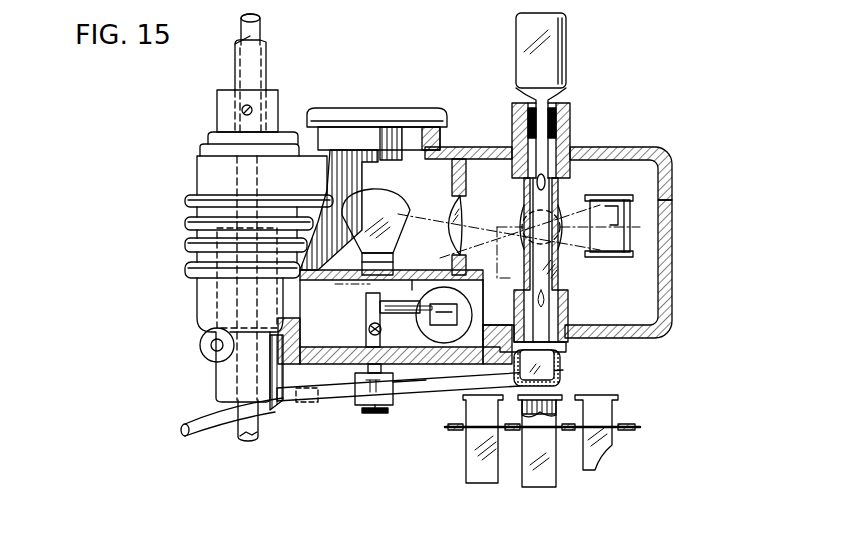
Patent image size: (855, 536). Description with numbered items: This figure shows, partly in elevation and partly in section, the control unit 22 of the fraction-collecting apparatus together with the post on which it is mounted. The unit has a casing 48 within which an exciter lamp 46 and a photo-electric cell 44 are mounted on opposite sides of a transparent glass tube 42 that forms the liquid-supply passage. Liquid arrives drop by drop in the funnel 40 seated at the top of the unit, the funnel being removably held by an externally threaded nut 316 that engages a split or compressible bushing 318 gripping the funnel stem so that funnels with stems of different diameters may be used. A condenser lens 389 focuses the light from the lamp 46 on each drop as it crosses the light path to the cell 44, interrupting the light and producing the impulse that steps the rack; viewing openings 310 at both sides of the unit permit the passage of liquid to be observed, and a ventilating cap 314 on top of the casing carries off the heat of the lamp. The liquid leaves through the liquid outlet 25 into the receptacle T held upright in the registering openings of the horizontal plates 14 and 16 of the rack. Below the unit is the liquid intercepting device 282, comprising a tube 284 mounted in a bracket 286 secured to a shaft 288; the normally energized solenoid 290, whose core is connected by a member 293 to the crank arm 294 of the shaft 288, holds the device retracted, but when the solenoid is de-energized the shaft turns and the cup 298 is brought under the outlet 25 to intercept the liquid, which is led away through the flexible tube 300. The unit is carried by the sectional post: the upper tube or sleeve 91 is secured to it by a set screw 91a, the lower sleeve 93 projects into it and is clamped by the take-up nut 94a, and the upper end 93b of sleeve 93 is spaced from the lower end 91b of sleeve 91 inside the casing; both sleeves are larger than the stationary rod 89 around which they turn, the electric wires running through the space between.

The horizontal plate 14 is at (626, 418).
The lower plate 16 is at (337, 108).
The control unit 22 is at (664, 182).
The liquid outlet 25 is at (562, 354).
The funnel 40 is at (567, 53).
The transparent glass tube 42 is at (558, 264).
The photo-electric cell 44 is at (634, 240).
The exciter lamp 46 is at (395, 200).
The casing 48 is at (655, 154).
The stationary rod 89 is at (262, 24).
The upper tube or sleeve 91 is at (266, 57).
The set screw 91a is at (244, 110).
The lower end of sleeve 91b is at (245, 138).
The tube or sleeve 93 is at (214, 390).
The upper end of sleeve 93b is at (232, 228).
The take-up nut 94a is at (200, 350).
The liquid intercepting device 282 is at (426, 395).
The tube 284 is at (312, 401).
The bracket 286 is at (375, 418).
The shaft 288 is at (370, 352).
The solenoid 290 is at (447, 338).
The member 293 is at (412, 285).
The crank arm 294 is at (366, 305).
The cup 298 is at (562, 375).
The flexible tube 300 is at (222, 436).
The viewing opening 310 is at (524, 215).
The ventilating cap 314 is at (390, 108).
The externally threaded nut 316 is at (548, 110).
The split or compressible bushing 318 is at (568, 113).
The condenser lens 389 is at (453, 226).
The receptacle T is at (606, 443).